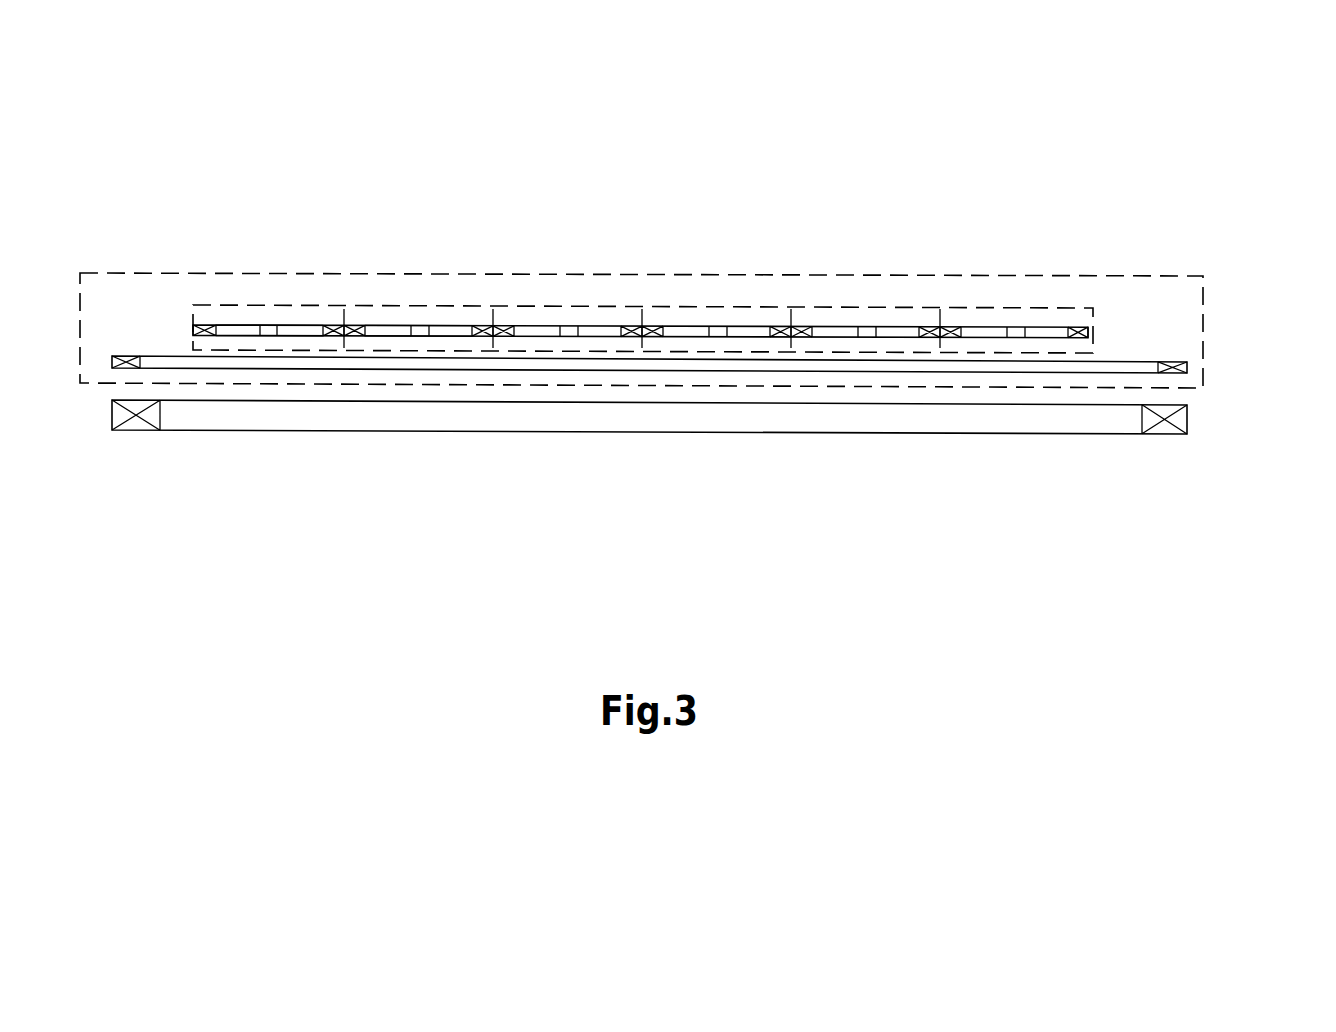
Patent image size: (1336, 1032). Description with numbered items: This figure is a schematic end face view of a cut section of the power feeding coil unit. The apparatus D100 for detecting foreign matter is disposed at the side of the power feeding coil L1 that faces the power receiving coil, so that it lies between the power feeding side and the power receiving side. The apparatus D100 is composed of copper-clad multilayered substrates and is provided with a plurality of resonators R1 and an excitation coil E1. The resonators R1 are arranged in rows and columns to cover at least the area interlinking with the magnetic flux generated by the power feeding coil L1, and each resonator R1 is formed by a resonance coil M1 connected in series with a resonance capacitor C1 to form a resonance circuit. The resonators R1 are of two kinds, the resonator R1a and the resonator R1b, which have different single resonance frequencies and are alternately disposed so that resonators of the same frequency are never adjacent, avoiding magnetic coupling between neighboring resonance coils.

The resonator R1 is at (1162, 165).
The resonator R1a is at (283, 307).
The resonator R1b is at (437, 307).
The resonance coil M1 is at (194, 325).
The resonance capacitor C1 is at (258, 325).
The apparatus for detecting foreign matter D100 is at (1203, 327).
The excitation coil E1 is at (1187, 373).
The power feeding coil L1 is at (1163, 435).